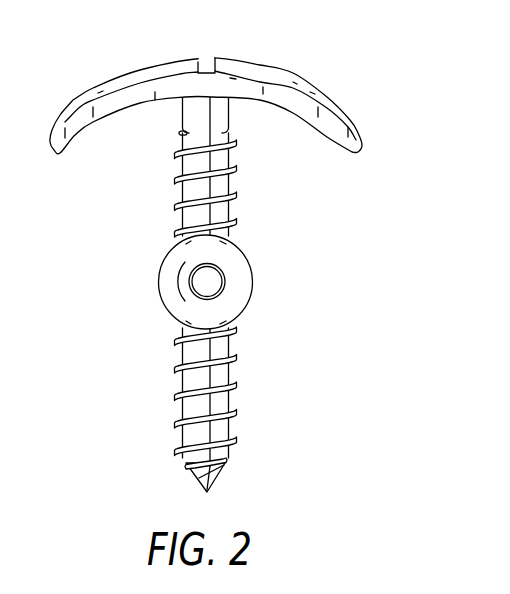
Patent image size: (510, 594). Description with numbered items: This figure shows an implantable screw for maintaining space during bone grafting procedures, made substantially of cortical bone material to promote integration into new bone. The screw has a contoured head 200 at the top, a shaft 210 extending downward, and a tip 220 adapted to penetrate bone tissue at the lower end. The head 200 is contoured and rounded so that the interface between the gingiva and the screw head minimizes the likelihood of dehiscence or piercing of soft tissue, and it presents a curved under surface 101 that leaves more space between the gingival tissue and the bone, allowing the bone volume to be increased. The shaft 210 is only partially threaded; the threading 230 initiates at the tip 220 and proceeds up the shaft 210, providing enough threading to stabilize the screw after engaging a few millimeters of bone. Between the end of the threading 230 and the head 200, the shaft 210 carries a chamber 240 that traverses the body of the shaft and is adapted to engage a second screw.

The head 200 is at (230, 269).
The under surface 101 is at (90, 125).
The shaft 210 is at (236, 177).
The disc / flange 240 is at (256, 277).
The threading 230 is at (172, 400).
The tip 220 is at (222, 478).